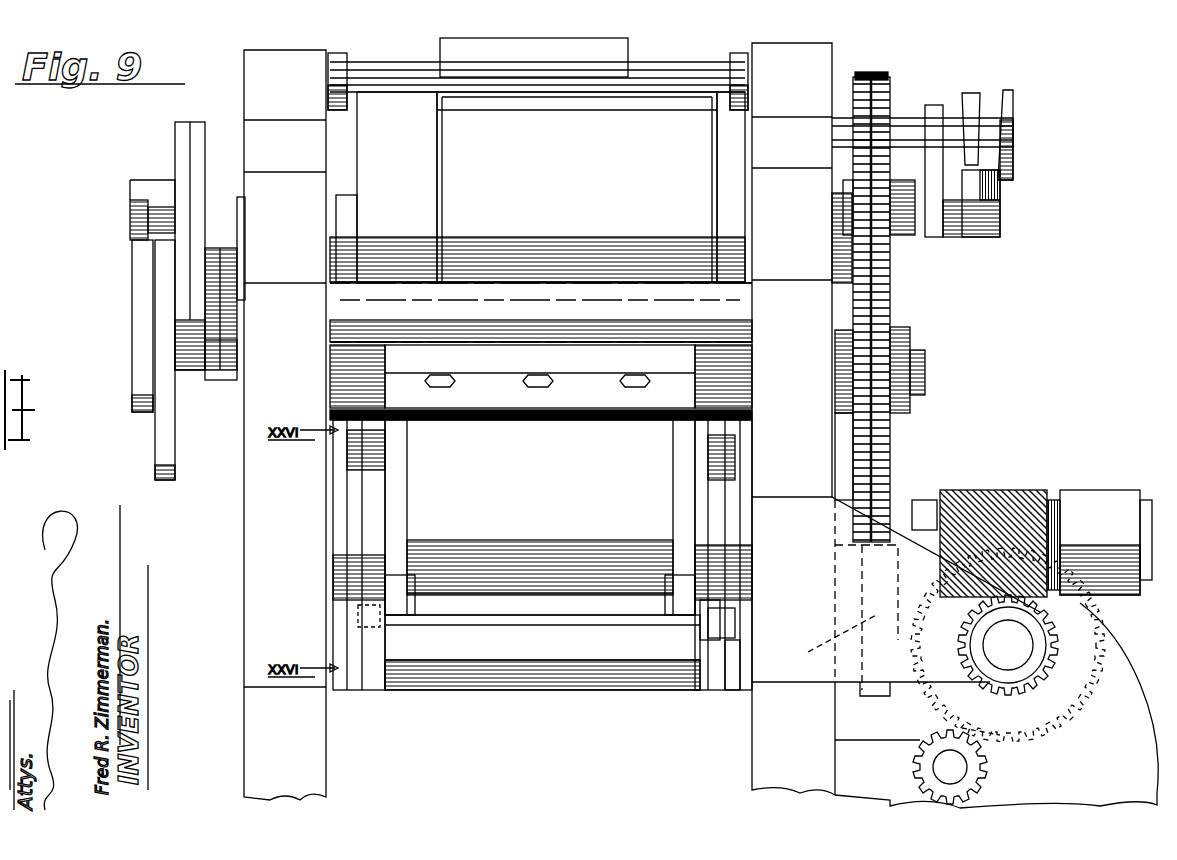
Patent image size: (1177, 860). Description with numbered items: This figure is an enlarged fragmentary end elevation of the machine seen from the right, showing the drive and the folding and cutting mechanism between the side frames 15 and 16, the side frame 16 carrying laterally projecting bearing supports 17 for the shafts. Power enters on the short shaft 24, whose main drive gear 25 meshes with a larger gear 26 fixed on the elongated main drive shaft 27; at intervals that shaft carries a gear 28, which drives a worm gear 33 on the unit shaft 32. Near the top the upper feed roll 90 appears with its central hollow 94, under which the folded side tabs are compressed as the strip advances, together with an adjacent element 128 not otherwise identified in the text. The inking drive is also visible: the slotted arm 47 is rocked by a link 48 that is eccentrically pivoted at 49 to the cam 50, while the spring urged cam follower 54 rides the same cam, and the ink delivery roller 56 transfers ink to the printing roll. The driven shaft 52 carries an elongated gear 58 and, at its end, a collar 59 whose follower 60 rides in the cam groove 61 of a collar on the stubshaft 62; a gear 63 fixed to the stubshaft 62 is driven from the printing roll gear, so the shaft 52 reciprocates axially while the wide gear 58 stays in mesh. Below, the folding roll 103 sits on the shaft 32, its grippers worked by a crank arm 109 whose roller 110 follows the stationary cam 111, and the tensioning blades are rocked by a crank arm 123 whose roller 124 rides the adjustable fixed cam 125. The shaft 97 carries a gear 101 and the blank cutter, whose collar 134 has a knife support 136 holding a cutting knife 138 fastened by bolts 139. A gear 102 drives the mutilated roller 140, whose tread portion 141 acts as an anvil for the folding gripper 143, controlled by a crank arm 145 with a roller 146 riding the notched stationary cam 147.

The side frame 15 is at (285, 425).
The side frame 16 is at (792, 270).
The bearing support 17 is at (955, 652).
The short shaft 24 is at (952, 768).
The main drive gear 25 is at (990, 790).
The larger gear 26 is at (1080, 675).
The main drive shaft 27 is at (1015, 648).
The gear 28 is at (1038, 692).
The shaft 32 is at (920, 515).
The worm gear 33 is at (985, 490).
The slotted arm 47 is at (160, 445).
The link 48 is at (138, 280).
The eccentric pivot 49 is at (130, 200).
The cam 50 is at (185, 152).
The driven shaft 52 is at (905, 218).
The cam follower 54 is at (222, 345).
The ink delivery roller 56 is at (534, 57).
The elongated gear 58 is at (880, 228).
The collar 59 is at (980, 185).
The follower 60 is at (1000, 170).
The cam groove 61 is at (985, 118).
The stubshaft 62 is at (897, 128).
The gear 63 is at (860, 78).
The upper roll 90 is at (540, 187).
The hollow 94 is at (612, 148).
The shaft 97 is at (917, 360).
The gear 101 is at (860, 445).
The gear 102 is at (808, 652).
The folding roll 103 is at (540, 517).
The crank arm 109 is at (712, 440).
The roller 110 is at (732, 478).
The stationary cam 111 is at (730, 535).
The crank arm 123 is at (372, 455).
The roller 124 is at (345, 455).
The fixed cam 125 is at (352, 530).
The shaft 128 is at (490, 300).
The collar 134 is at (640, 330).
The knife support 136 is at (565, 355).
The cutting knife 138 is at (600, 385).
The bolts 139 is at (538, 380).
The mutilated roller 140 is at (500, 618).
The tread portion 141 is at (540, 648).
The folding gripper 143 is at (592, 690).
The crank arm 145 is at (705, 620).
The roller 146 is at (735, 622).
The stationary cam 147 is at (730, 665).